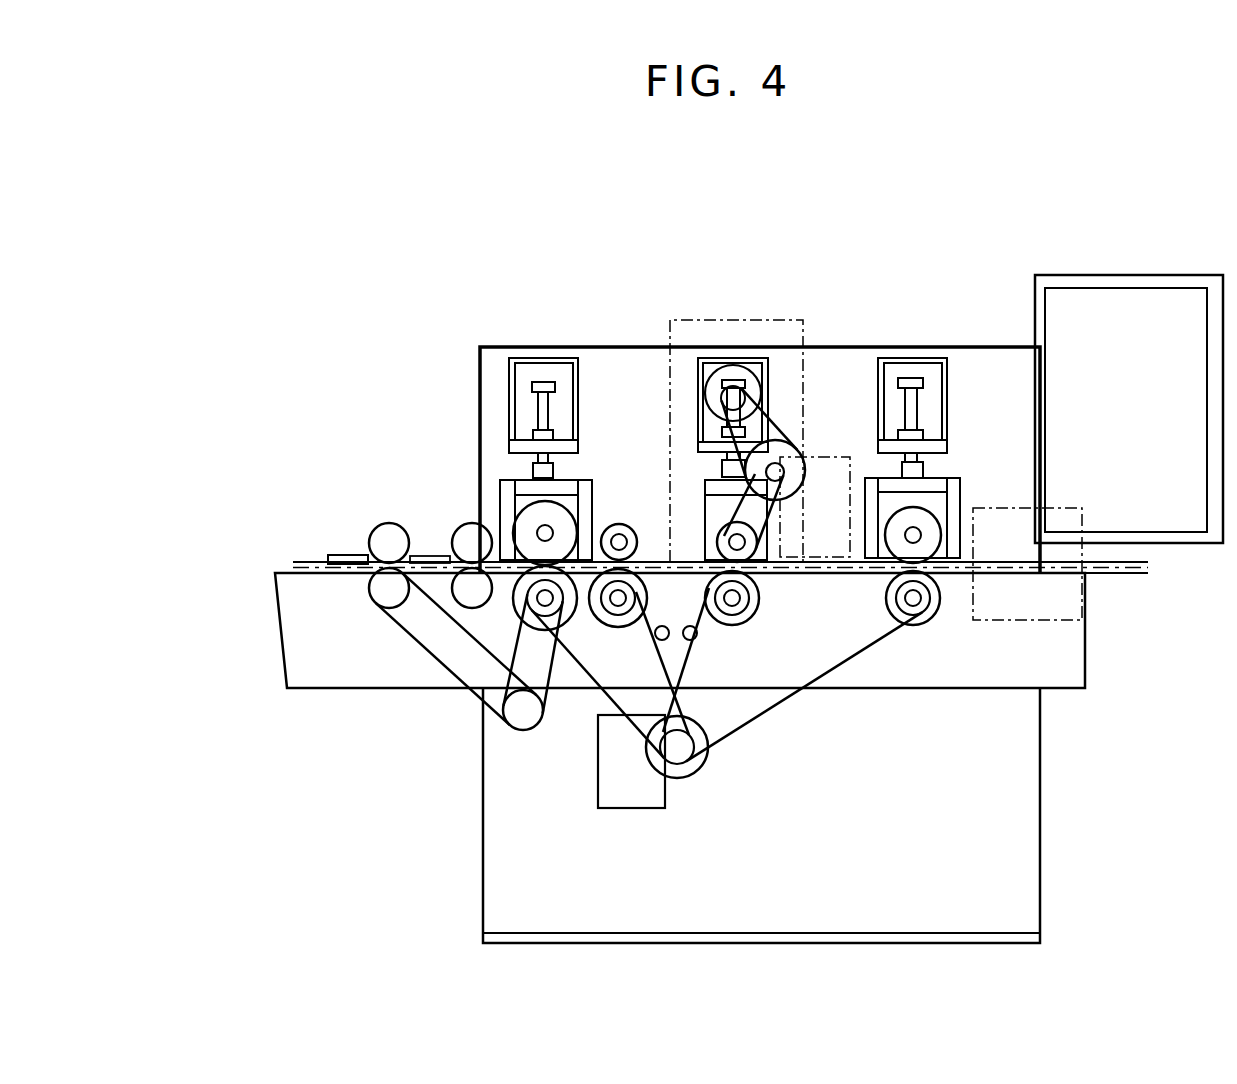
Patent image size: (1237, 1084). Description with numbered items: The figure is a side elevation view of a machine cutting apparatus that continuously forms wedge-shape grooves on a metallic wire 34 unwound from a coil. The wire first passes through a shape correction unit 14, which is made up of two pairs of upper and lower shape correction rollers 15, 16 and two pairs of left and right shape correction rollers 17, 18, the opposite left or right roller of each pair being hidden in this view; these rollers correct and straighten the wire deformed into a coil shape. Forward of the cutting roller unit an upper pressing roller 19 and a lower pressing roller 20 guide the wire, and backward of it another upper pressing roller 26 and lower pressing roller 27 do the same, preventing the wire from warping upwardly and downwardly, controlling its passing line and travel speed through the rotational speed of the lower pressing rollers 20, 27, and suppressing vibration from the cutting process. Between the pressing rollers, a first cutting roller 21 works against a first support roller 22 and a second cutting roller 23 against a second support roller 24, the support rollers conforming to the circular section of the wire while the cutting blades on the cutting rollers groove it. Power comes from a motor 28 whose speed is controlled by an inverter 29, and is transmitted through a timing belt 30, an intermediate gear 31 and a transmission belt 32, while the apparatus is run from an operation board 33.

The shape correction unit 14 is at (345, 542).
The upper and lower shape correction rollers 15 is at (390, 524).
The upper and lower shape correction rollers 16 is at (470, 524).
The left and right shape correction rollers 17 is at (347, 577).
The left and right shape correction rollers 18 is at (422, 608).
The upper pressing roller 19 is at (566, 508).
The lower pressing roller 20 is at (577, 602).
The first cutting roller 21 is at (615, 524).
The first support roller 22 is at (618, 628).
The second cutting roller 23 is at (720, 532).
The second support roller 24 is at (749, 625).
The upper pressing roller 26 is at (927, 518).
The lower pressing roller 27 is at (931, 620).
The motor 28 is at (740, 367).
The inverter 29 is at (633, 813).
The timing belt 30 is at (795, 452).
The intermediate gear 31 is at (797, 450).
The transmission belt 32 is at (397, 610).
The operation board 33 is at (1106, 422).
The metallic wire 34 is at (306, 562).